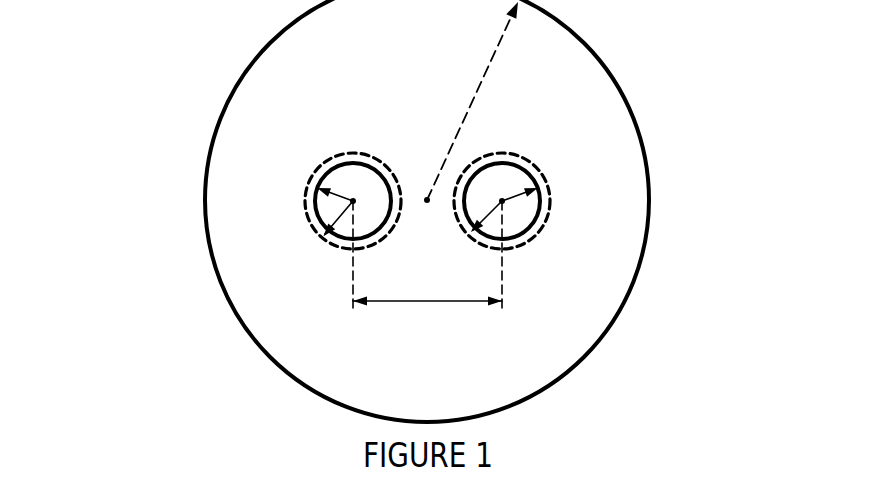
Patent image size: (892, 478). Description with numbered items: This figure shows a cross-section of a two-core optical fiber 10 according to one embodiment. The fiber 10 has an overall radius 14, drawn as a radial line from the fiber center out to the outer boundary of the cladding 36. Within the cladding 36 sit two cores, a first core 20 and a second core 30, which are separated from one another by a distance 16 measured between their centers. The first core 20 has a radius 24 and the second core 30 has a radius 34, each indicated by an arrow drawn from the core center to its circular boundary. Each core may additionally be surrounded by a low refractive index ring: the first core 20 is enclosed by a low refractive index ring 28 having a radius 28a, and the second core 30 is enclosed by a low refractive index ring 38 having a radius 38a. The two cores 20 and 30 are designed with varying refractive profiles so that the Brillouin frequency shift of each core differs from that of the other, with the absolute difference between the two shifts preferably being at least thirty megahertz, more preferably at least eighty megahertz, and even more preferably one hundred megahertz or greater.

The two-core optical fiber 10 is at (168, 41).
The radius 14 is at (480, 85).
The distance 16 is at (432, 300).
The core 20 is at (315, 203).
The radius 24 is at (339, 196).
The low refractive index ring 28 is at (348, 153).
The radius 28a is at (338, 219).
The core 30 is at (540, 202).
The radius 34 is at (514, 195).
The cladding 36 is at (305, 45).
The low refractive index ring 38 is at (549, 180).
The radius 38a is at (484, 219).